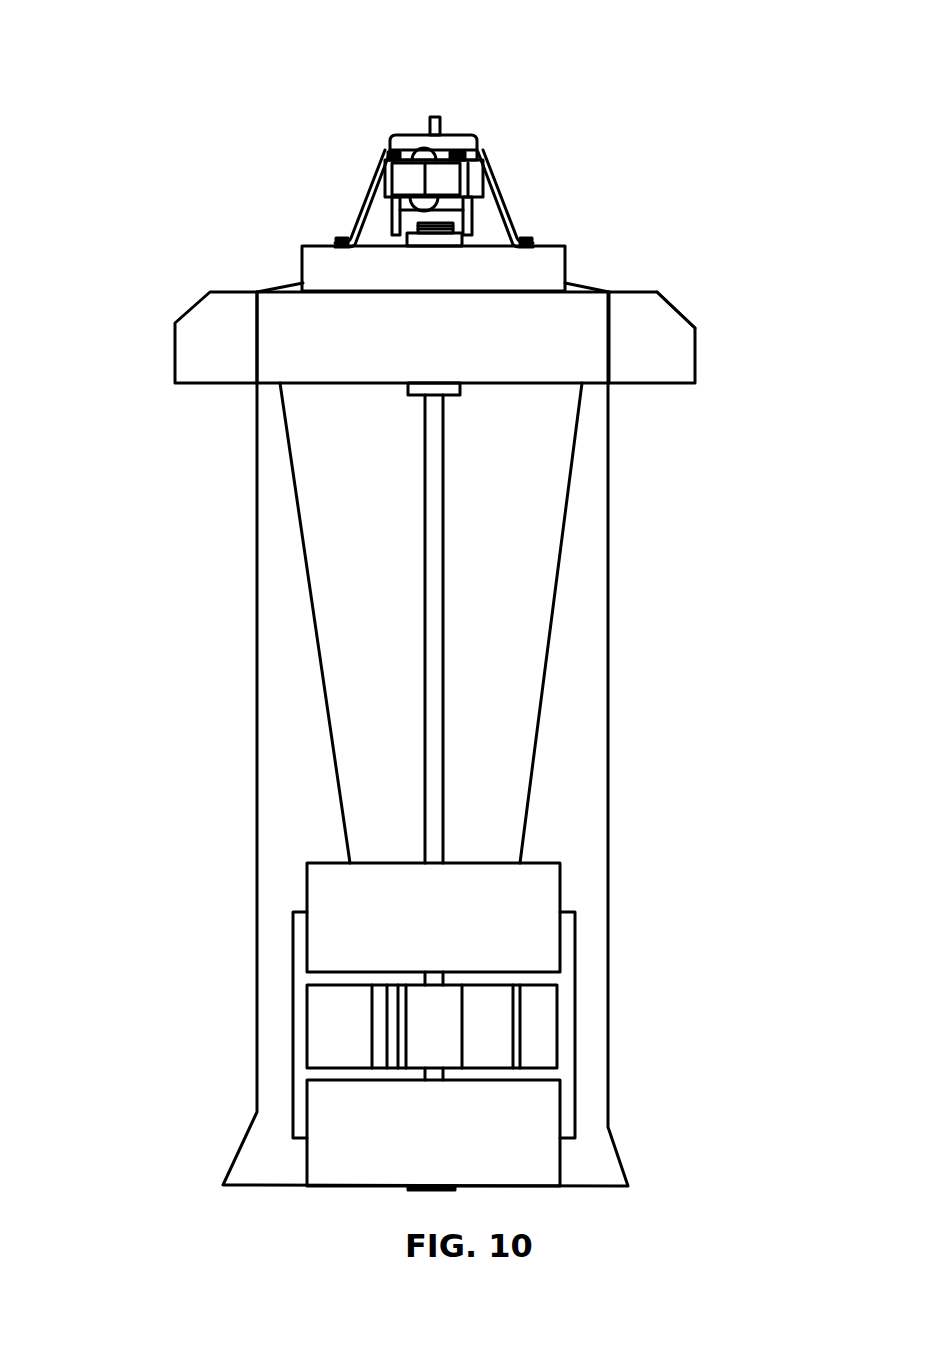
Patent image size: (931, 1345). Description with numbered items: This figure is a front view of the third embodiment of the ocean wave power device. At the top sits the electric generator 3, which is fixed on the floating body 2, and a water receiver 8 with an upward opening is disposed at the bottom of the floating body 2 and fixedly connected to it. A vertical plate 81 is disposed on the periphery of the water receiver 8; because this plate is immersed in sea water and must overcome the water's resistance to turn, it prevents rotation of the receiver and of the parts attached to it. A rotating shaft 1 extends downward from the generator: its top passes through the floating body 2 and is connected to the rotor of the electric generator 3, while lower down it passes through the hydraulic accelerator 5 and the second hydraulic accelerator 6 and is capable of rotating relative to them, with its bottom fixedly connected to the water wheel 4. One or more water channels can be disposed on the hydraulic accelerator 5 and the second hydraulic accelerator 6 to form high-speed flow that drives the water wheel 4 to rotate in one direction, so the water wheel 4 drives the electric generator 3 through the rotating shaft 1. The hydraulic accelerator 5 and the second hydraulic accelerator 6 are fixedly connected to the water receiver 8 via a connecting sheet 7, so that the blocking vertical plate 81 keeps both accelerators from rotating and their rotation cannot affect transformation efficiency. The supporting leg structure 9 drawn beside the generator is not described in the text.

The rotating shaft 1 is at (290, 786).
The floating body 2 is at (474, 188).
The electric generator 3 is at (381, 129).
The water wheel 4 is at (519, 917).
The hydraulic accelerator 5 is at (507, 803).
The second hydraulic accelerator 6 is at (513, 1081).
The connecting sheet 7 is at (427, 739).
The water receiver 8 is at (442, 272).
The vertical plate 81 is at (710, 358).
The support legs 9 is at (475, 130).